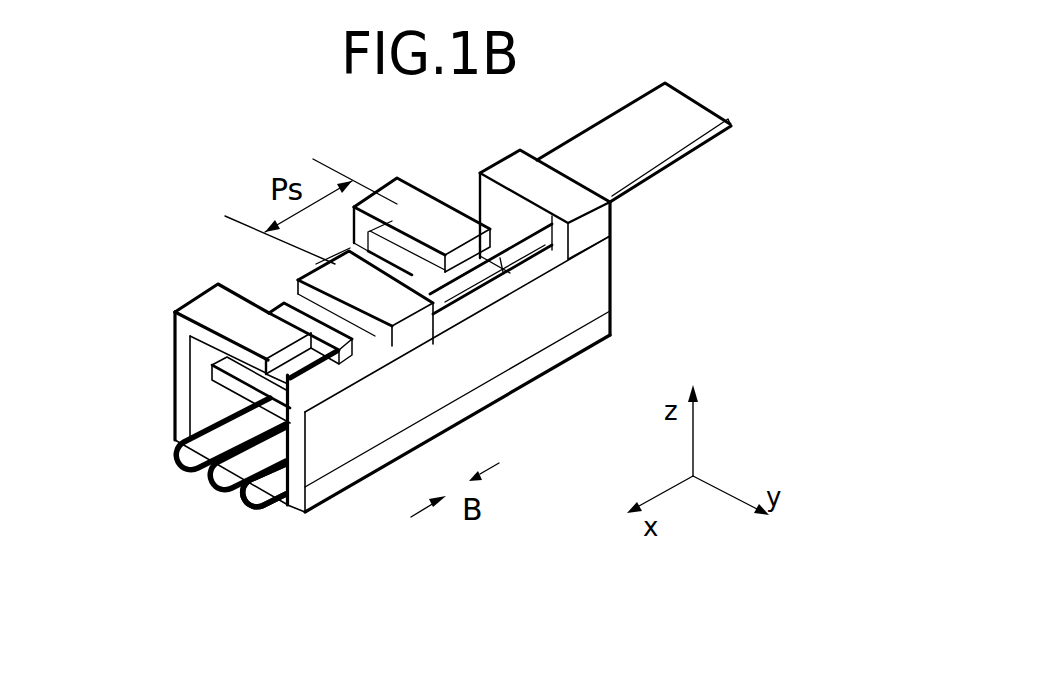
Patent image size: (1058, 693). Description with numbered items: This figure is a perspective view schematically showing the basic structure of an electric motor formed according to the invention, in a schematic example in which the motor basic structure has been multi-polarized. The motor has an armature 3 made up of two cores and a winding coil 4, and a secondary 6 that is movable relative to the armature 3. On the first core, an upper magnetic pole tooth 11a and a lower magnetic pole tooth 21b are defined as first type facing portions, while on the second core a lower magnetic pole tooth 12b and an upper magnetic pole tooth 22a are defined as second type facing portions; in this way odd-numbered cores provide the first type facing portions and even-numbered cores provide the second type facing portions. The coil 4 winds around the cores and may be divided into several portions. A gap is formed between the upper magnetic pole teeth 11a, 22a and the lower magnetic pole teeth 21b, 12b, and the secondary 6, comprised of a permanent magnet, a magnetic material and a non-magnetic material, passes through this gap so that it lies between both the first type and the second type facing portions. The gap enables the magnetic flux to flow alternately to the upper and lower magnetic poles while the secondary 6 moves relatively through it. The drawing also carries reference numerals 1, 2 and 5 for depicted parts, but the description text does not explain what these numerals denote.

The holder 1 is at (181, 388).
The base 2 is at (297, 462).
The armature 3 is at (628, 297).
The winding coil 4 is at (216, 484).
The coil end portion 5 is at (259, 530).
The secondary 6 is at (678, 162).
The upper magnetic pole tooth 11a is at (232, 328).
The lower magnetic pole tooth 12b is at (298, 281).
The lower magnetic pole tooth 21b is at (432, 405).
The upper magnetic pole tooth 22a is at (383, 299).